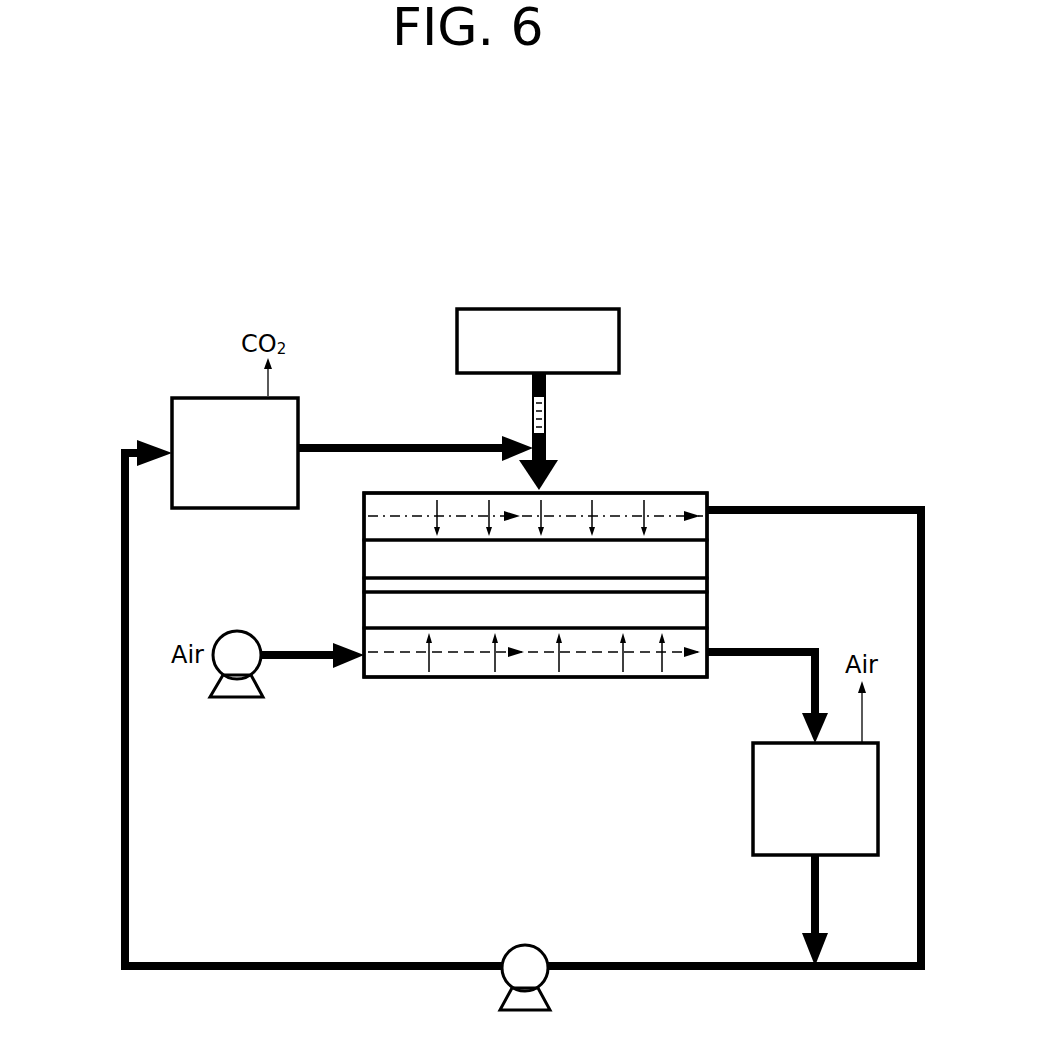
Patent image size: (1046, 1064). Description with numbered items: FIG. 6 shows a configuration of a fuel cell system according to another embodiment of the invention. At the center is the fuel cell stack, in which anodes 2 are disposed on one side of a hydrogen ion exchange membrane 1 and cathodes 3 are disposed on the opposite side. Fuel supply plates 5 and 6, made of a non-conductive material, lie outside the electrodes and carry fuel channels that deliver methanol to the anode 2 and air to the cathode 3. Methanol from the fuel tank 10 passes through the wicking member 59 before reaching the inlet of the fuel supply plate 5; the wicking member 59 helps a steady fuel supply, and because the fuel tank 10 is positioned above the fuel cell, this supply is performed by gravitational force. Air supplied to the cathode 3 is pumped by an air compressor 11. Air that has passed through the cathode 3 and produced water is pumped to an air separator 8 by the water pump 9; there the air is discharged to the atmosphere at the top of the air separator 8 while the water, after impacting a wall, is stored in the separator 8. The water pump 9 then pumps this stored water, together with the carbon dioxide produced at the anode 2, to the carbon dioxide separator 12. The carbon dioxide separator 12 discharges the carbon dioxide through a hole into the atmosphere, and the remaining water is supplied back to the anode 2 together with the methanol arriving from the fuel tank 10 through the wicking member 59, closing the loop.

The hydrogen ion exchange membrane 1 is at (688, 586).
The anode 2 is at (690, 555).
The cathode 3 is at (690, 611).
The fuel supply plate 5 is at (707, 492).
The fuel supply plate 6 is at (680, 668).
The air separator 8 is at (753, 788).
The water pump 9 is at (525, 945).
The fuel tank 10 is at (619, 343).
The air compressor 11 is at (237, 631).
The carbon dioxide separator 12 is at (200, 398).
The wicking member 59 is at (546, 417).